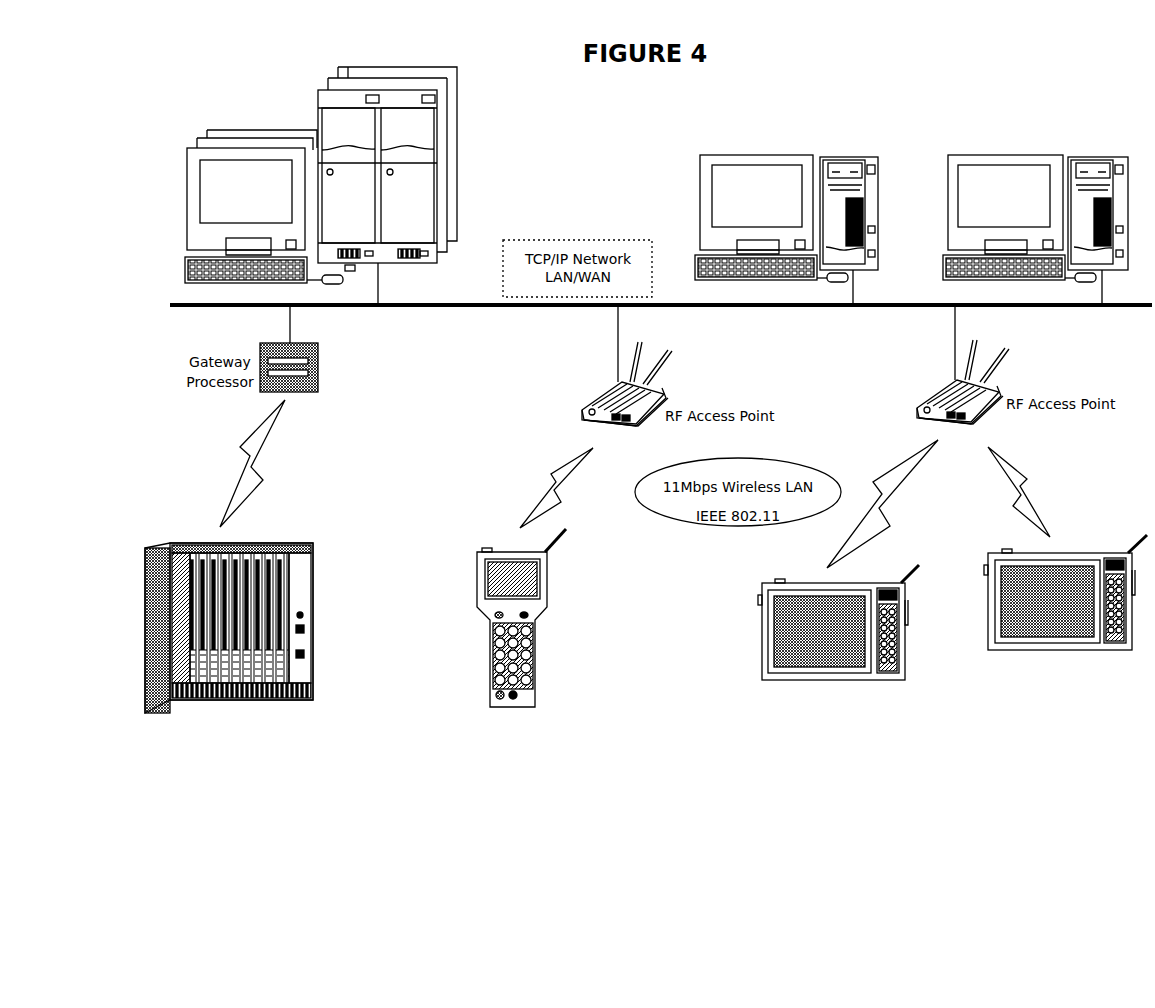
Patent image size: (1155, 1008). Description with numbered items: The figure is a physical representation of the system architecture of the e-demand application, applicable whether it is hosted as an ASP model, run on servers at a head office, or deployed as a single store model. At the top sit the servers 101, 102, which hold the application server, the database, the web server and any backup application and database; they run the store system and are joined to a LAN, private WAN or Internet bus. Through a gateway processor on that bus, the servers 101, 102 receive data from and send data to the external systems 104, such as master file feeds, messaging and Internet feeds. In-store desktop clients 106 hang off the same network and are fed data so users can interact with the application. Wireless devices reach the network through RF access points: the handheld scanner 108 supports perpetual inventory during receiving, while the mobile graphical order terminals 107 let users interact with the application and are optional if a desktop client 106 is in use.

The server 101 is at (321, 161).
The server 102 is at (321, 175).
The external systems 104 is at (229, 658).
The desktop client 106 is at (911, 187).
The graphical order terminal 107 is at (952, 636).
The handheld scanner 108 is at (513, 644).